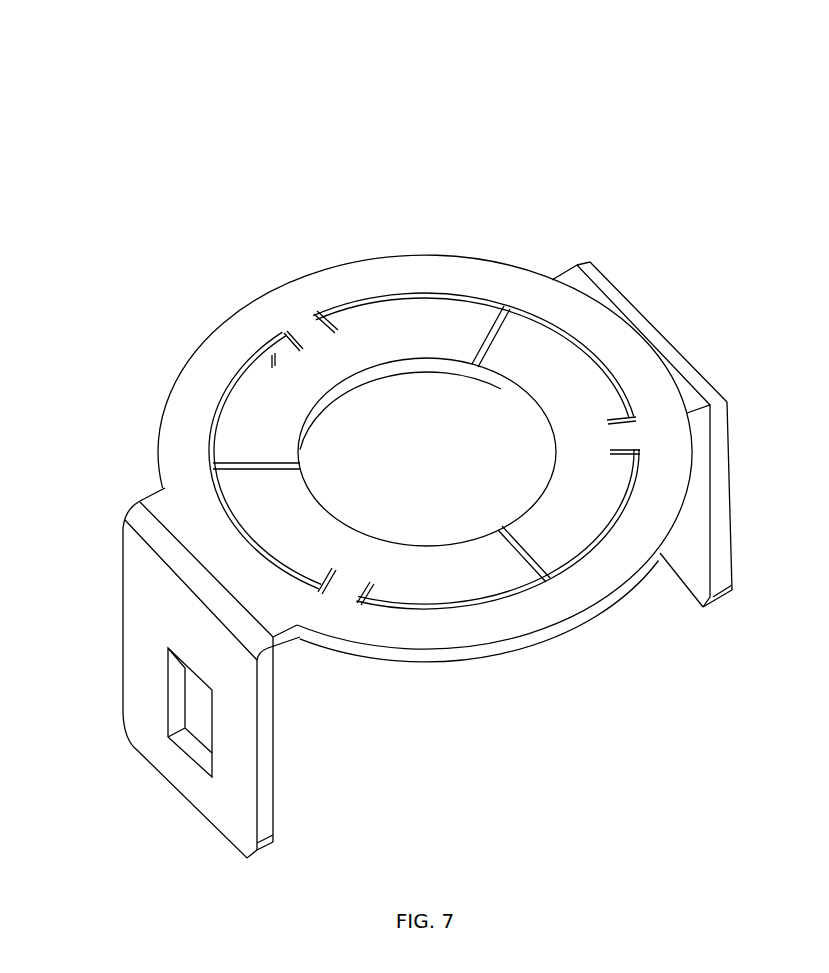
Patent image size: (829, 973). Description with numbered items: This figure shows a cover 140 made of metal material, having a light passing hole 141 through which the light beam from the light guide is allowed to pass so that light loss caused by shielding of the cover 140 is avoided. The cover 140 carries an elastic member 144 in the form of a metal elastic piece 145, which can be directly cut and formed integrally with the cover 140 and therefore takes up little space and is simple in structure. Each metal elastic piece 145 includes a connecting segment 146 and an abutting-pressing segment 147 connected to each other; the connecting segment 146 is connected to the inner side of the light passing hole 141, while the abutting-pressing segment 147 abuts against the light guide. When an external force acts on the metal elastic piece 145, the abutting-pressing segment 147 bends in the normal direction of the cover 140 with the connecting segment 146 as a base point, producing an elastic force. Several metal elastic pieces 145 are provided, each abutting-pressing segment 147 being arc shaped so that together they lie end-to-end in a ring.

The cover 140 is at (213, 387).
The light passing hole 141 is at (453, 450).
The elastic member 144 is at (238, 301).
The metal elastic piece 145 is at (480, 120).
The connecting segment 146 is at (310, 333).
The abutting-pressing segment 147 is at (407, 333).